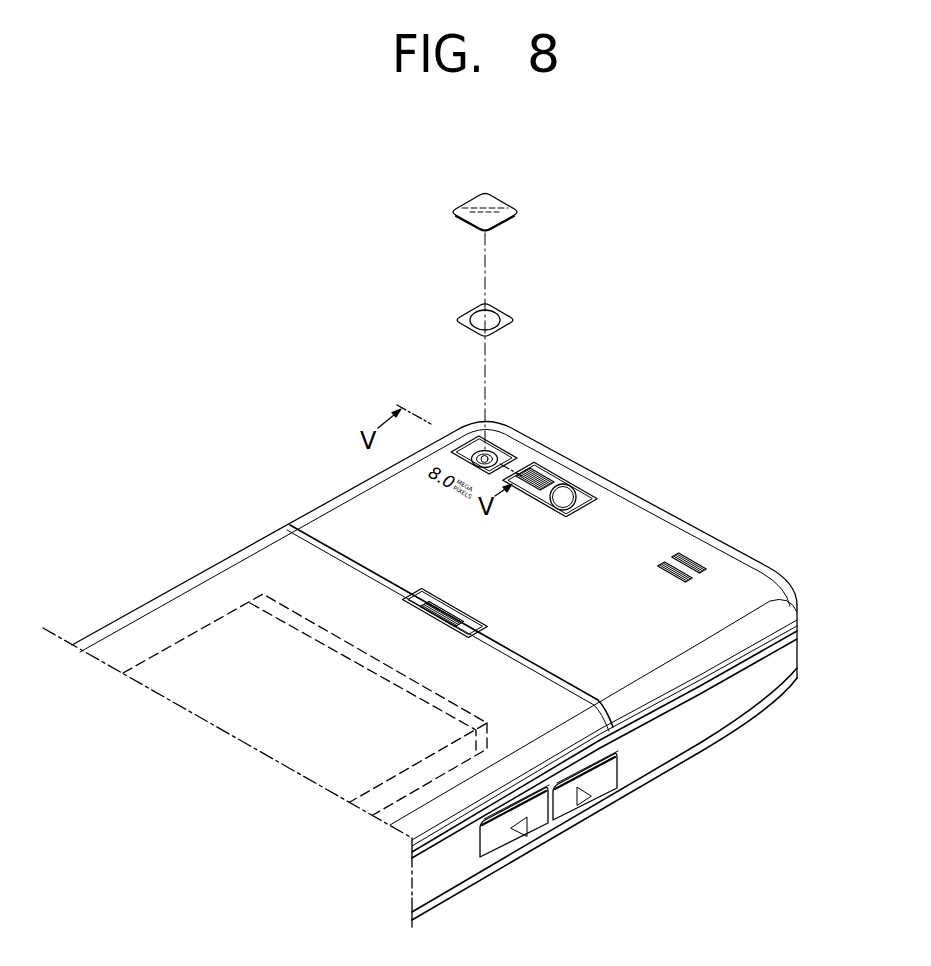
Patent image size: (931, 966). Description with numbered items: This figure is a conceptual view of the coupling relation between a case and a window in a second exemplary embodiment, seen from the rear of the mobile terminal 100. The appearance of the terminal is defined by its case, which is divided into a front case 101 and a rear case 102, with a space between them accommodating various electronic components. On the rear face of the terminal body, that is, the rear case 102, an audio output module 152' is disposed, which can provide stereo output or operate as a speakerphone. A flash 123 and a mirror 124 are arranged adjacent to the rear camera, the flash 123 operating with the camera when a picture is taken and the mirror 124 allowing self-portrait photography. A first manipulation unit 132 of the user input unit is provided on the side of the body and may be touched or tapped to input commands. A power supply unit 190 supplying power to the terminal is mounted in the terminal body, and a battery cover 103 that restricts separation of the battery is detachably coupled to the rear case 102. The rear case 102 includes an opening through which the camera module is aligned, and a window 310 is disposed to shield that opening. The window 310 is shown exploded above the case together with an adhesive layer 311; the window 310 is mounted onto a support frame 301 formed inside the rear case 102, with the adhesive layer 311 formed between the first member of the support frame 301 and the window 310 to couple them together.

The mobile terminal 100 is at (258, 498).
The front case 101 is at (788, 667).
The rear case 102 is at (785, 633).
The battery cover 103 is at (227, 572).
The flash 123 is at (545, 477).
The mirror 124 is at (566, 492).
The first manipulation unit 132 is at (515, 838).
The audio output module 152' is at (720, 536).
The power supply unit 190 is at (210, 645).
The support frame 301 is at (490, 452).
The window 310 is at (470, 220).
The adhesive layer 311 is at (460, 322).